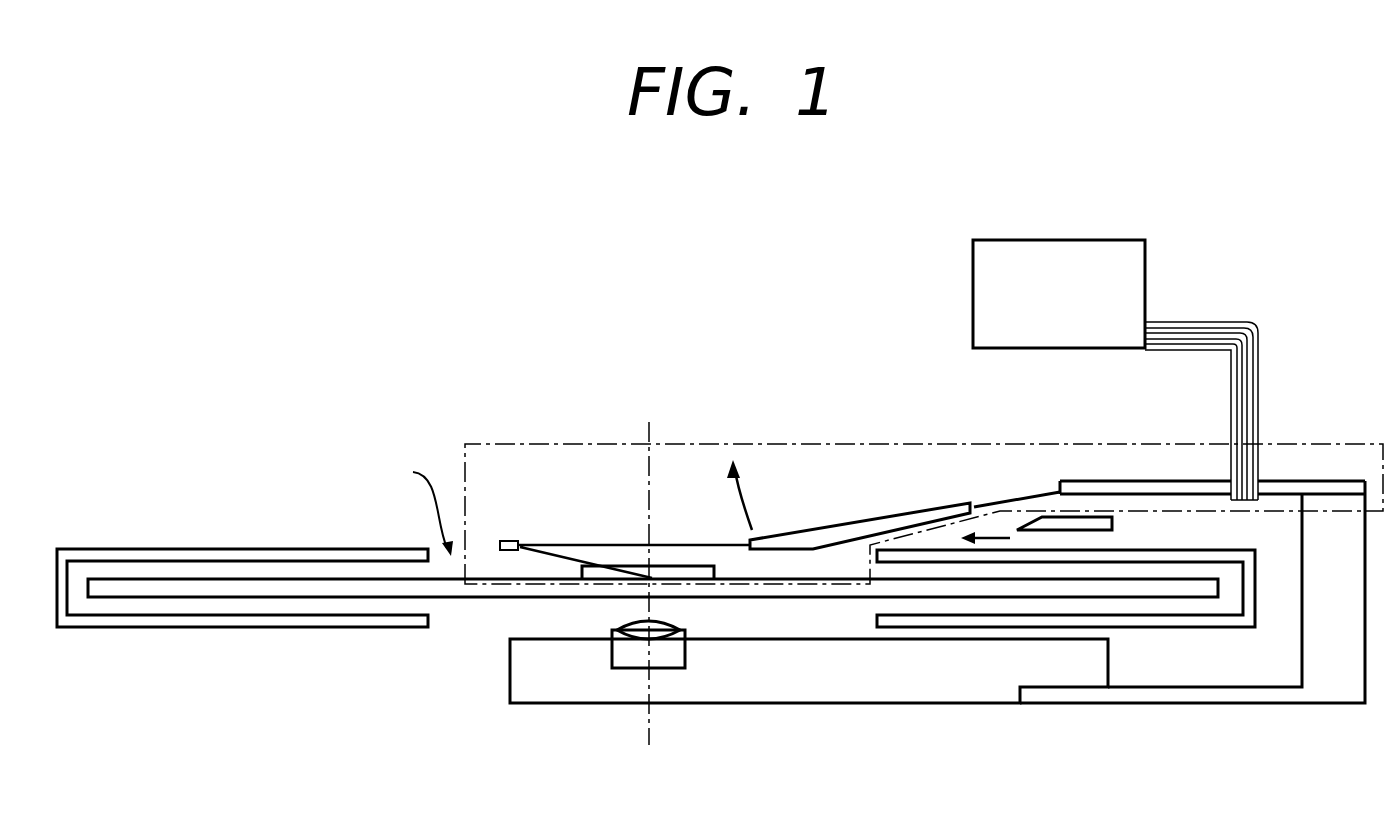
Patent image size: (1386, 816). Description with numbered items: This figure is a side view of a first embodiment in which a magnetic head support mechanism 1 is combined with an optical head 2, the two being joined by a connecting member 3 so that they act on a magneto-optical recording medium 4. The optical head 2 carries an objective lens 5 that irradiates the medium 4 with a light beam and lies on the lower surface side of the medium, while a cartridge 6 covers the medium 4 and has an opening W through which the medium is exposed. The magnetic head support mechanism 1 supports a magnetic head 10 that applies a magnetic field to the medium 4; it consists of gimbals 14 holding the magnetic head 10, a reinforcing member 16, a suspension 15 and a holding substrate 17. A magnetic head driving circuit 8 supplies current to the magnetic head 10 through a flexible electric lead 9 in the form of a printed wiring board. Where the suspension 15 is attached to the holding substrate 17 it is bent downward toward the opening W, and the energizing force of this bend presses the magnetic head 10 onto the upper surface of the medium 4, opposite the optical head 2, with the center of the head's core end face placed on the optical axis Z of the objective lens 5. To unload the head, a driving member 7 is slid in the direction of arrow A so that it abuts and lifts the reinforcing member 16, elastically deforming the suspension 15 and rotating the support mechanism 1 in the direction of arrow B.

The magnetic head support mechanism 1 is at (717, 443).
The optical head 2 is at (900, 688).
The connecting member 3 is at (1337, 680).
The magneto-optical recording medium 4 is at (368, 588).
The objective lens 5 is at (620, 654).
The cartridge 6 is at (1170, 622).
The driving member 7 is at (1095, 523).
The magnetic head driving circuit 8 is at (1083, 260).
The flexible electric lead 9 is at (1225, 322).
The magnetic head 10 is at (703, 572).
The gimbals 14 is at (562, 543).
The suspension 15 is at (1017, 500).
The reinforcing member 16 is at (832, 535).
The holding substrate 17 is at (1325, 485).
The opening W is at (419, 505).
The arrow A is at (998, 538).
The arrow B is at (730, 503).
The optical axis Z is at (649, 568).